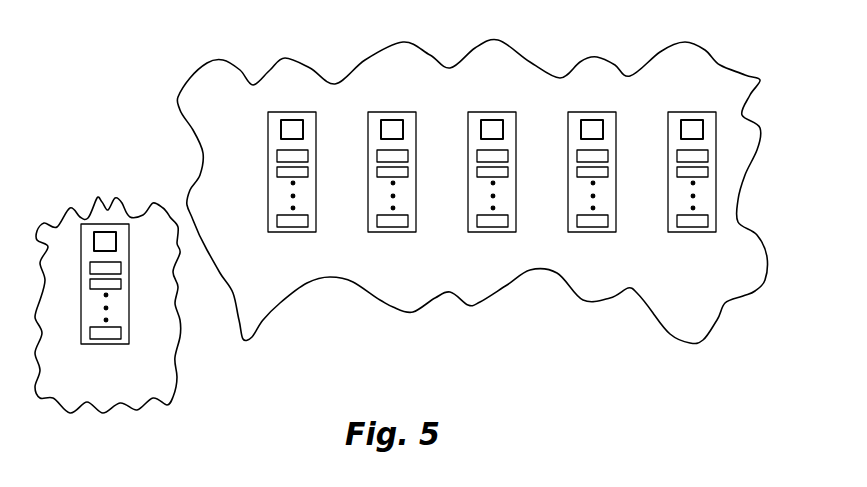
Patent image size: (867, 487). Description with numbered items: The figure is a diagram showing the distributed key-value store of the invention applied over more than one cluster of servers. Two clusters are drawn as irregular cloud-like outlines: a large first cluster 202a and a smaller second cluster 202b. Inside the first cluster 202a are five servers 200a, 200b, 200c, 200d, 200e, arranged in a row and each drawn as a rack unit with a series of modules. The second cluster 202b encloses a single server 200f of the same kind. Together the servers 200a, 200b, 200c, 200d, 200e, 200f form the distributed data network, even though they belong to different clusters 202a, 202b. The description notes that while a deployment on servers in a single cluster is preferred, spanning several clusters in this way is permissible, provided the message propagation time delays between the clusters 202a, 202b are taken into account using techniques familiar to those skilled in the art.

The cluster 202a is at (190, 80).
The cluster 202b is at (115, 198).
The server 200a is at (292, 232).
The server 200b is at (403, 232).
The server 200c is at (481, 112).
The server 200d is at (590, 233).
The server 200e is at (680, 233).
The server 200f is at (117, 344).